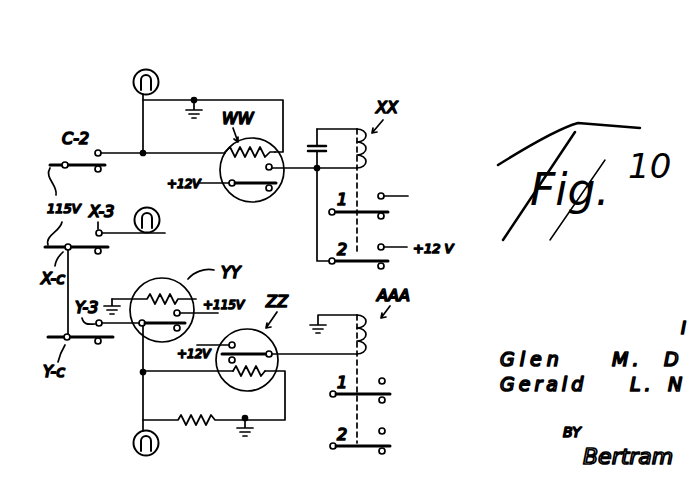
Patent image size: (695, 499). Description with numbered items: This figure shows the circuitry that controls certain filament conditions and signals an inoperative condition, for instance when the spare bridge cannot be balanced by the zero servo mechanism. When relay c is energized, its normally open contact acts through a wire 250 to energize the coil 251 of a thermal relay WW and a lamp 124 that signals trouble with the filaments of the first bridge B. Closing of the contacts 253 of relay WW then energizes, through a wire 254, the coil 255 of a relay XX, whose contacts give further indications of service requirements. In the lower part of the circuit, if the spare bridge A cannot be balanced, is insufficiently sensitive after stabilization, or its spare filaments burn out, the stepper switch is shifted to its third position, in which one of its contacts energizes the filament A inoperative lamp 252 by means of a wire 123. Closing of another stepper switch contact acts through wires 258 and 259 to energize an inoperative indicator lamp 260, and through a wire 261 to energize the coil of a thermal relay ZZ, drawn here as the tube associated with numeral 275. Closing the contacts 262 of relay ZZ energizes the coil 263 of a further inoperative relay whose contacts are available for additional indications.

The lamp 124 is at (147, 70).
The wire 250 is at (130, 150).
The coil 251 is at (252, 138).
The contacts 253 is at (250, 190).
The wire 254 is at (299, 172).
The coil 255 is at (366, 148).
The wire 123 is at (127, 238).
The filament A inoperative lamp 252 is at (163, 228).
The tube YY 275 is at (198, 298).
The wire 258 is at (122, 328).
The wire 259 is at (143, 412).
The inoperative indicator lamp 260 is at (134, 443).
The wire 261 is at (164, 374).
The contacts 262 is at (250, 354).
The coil 263 is at (366, 333).